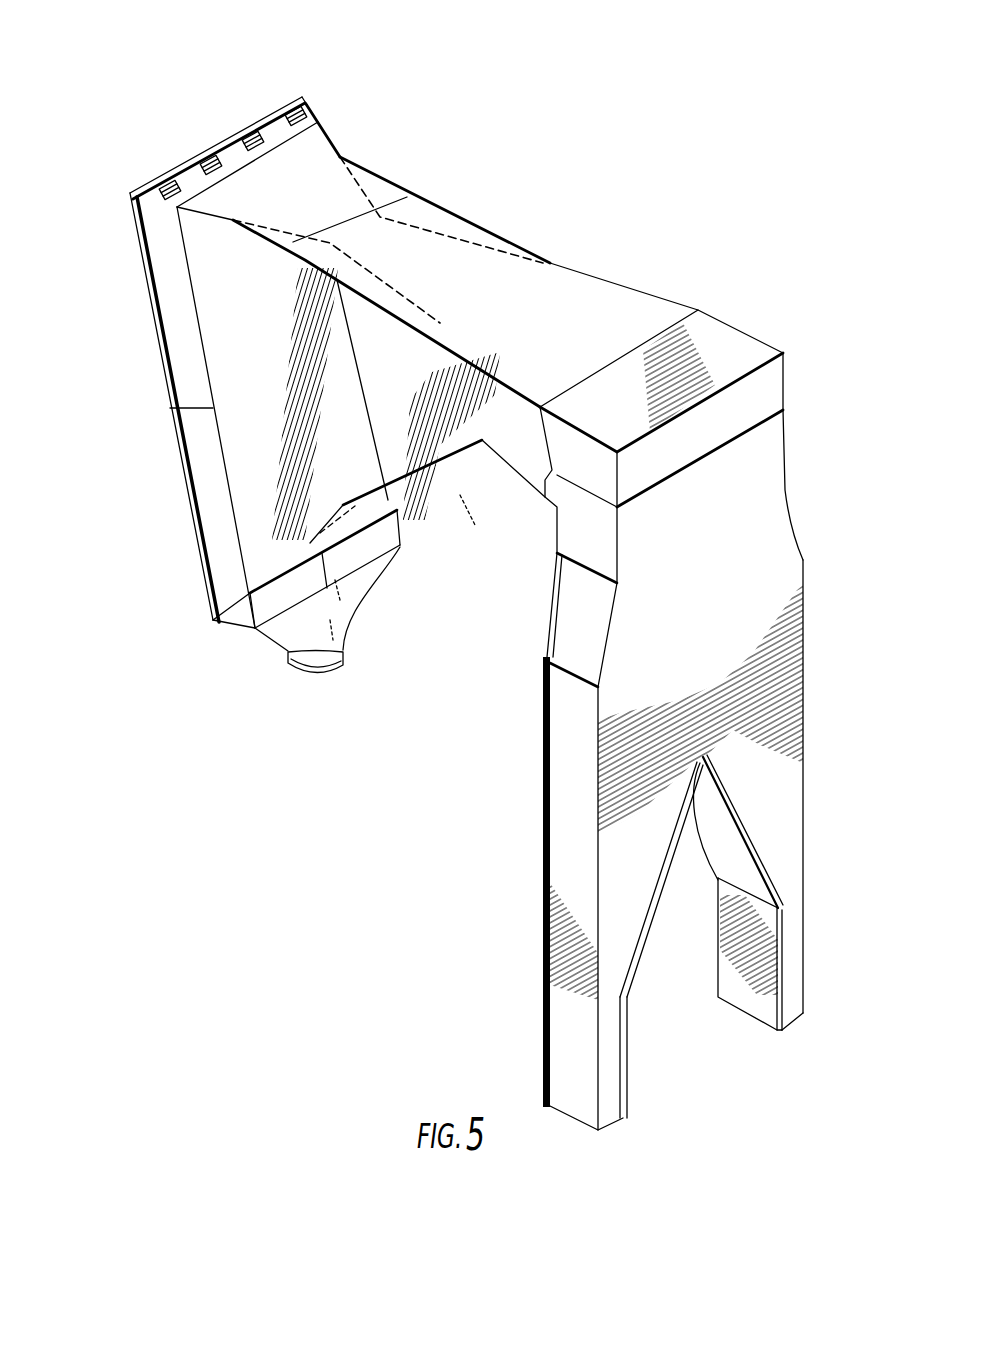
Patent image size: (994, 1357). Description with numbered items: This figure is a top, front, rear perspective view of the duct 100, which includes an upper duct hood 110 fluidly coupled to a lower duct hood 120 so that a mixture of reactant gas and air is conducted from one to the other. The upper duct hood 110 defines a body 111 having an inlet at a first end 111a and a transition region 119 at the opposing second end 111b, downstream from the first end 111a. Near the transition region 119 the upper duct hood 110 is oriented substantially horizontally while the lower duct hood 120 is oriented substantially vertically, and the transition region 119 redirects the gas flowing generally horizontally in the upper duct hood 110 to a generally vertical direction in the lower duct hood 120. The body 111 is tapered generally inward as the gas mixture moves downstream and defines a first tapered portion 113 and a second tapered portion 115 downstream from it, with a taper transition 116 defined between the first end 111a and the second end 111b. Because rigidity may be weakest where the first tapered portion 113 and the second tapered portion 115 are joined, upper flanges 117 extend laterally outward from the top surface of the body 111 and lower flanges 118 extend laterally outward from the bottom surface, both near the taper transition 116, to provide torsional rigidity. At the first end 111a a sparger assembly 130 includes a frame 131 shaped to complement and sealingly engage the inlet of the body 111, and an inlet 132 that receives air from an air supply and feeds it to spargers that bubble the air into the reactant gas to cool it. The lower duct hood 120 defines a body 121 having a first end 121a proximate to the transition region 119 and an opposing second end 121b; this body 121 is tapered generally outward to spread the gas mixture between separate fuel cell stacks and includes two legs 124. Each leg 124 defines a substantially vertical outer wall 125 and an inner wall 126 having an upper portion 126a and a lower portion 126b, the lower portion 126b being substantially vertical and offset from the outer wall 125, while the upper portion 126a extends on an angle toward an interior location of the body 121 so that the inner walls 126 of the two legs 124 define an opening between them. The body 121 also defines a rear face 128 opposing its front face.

The duct 100 is at (98, 133).
The upper duct hood 110 is at (505, 230).
The body 111 is at (430, 253).
The first end 111a is at (334, 118).
The second end 111b is at (563, 257).
The first tapered portion 113 is at (278, 372).
The second tapered portion 115 is at (439, 440).
The taper transition 116 is at (360, 378).
The upper flanges 117 is at (412, 217).
The lower flanges 118 is at (327, 520).
The transition region 119 is at (734, 345).
The lower duct hood 120 is at (816, 719).
The body 121 is at (737, 620).
The first end 121a is at (761, 457).
The second end 121b is at (816, 985).
The legs 124 is at (816, 880).
The outer wall 125 is at (567, 1018).
The inner wall 126 is at (755, 881).
The upper portion 126a is at (720, 830).
The lower portion 126b is at (757, 928).
The rear face 128 is at (763, 533).
The sparger assembly 130 is at (216, 134).
The frame 131 is at (220, 550).
The inlet 132 is at (320, 675).